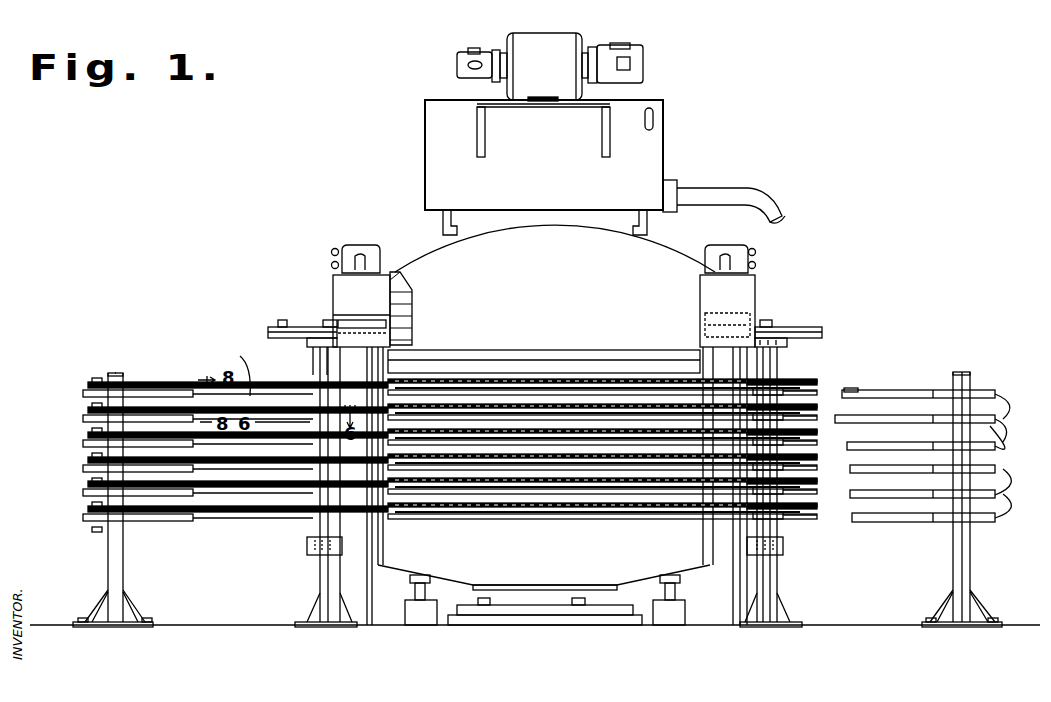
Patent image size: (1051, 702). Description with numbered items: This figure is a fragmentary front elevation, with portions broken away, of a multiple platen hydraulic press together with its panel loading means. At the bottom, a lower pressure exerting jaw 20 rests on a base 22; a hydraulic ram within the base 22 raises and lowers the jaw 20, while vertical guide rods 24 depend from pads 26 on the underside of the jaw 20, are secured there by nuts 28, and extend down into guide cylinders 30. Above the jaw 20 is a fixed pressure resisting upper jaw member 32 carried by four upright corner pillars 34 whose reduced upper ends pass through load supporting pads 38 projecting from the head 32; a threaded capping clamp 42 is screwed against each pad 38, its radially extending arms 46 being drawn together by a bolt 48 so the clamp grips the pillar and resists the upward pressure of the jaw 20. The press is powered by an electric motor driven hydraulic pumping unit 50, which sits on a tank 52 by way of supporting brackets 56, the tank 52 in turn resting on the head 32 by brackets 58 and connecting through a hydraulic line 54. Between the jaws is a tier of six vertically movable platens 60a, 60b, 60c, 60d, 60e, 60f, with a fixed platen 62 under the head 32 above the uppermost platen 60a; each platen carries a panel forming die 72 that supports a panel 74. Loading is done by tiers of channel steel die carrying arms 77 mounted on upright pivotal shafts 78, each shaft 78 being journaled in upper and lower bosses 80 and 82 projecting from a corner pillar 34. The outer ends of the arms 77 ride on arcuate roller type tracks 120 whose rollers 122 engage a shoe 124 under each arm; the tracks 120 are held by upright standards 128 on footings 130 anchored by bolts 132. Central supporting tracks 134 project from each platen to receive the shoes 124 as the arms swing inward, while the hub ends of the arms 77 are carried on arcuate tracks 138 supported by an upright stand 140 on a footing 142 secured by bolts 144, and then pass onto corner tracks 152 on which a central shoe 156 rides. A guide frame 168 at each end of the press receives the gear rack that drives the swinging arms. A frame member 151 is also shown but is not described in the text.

The lower jaw 20 is at (558, 561).
The base 22 is at (543, 606).
The vertical guide rods 24 is at (426, 596).
The pads 26 is at (414, 575).
The nuts 28 is at (432, 582).
The vertical guide cylinder 30 is at (420, 612).
The upper jaw member 32 is at (568, 276).
The corner pillars 34 is at (317, 572).
The load supporting pads 38 is at (368, 306).
The capping clamp 42 is at (360, 248).
The radially extending arms 46 is at (336, 249).
The bolt 48 is at (330, 265).
The hydraulic pumping unit 50 is at (558, 70).
The tank 52 is at (555, 160).
The hydraulic line 54 is at (722, 192).
The supporting brackets 56 is at (477, 144).
The brackets 58 is at (443, 230).
The uppermost movable platen 60a is at (613, 372).
The movable platen 60b is at (588, 408).
The movable platen 60c is at (610, 437).
The movable platen 60d is at (583, 471).
The movable platen 60e is at (470, 490).
The lowermost movable platen 60f is at (426, 516).
The fixed pressure resisting platen 62 is at (486, 373).
The panel forming die 72 is at (92, 381).
The panel 74 is at (140, 382).
The die carrying arms 77 is at (93, 385).
The pivotal shaft 78 is at (312, 365).
The upper boss 80 is at (307, 341).
The lower boss 82 is at (307, 546).
The roller type tracks 120 is at (88, 401).
The rollers 122 is at (850, 389).
The shoe 124 is at (88, 432).
The upright standards 128 is at (124, 561).
The footings 130 is at (136, 612).
The bolts 132 is at (78, 618).
The central supporting tracks 134 is at (530, 378).
The arcuate roller carrying tracks 138 is at (834, 433).
The upright stand 140 is at (318, 589).
The footing 142 is at (316, 622).
The bolts 144 is at (298, 618).
The frame member 151 is at (380, 388).
The roller type supporting track 152 is at (386, 510).
The central shoe 156 is at (230, 512).
The guide frame 168 is at (268, 332).